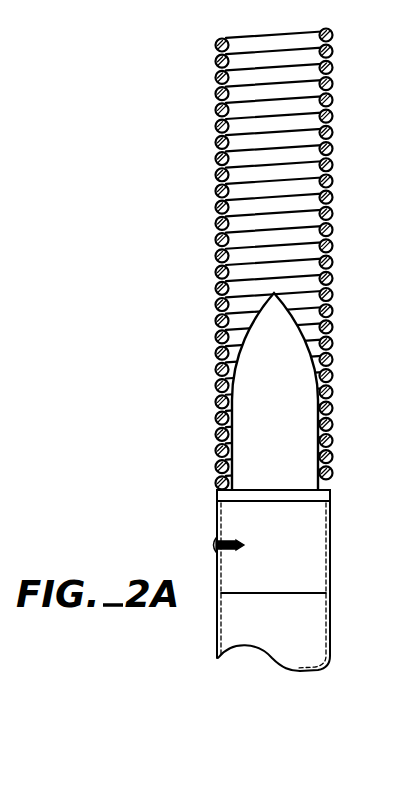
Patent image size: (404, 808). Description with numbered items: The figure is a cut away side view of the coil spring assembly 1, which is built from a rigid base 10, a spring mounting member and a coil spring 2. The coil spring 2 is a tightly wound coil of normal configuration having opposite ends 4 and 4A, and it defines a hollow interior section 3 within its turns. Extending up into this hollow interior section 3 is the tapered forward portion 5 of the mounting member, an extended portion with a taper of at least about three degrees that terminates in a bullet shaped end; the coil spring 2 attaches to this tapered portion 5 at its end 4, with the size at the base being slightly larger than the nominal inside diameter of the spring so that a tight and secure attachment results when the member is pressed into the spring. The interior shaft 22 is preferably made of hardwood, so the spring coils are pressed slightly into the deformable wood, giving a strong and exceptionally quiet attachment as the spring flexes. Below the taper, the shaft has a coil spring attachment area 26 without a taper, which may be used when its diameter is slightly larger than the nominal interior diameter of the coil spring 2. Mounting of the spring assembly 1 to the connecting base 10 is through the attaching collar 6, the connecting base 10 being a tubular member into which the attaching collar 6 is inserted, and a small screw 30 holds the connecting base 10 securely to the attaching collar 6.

The coil spring assembly 1 is at (337, 394).
The coil spring 2 is at (292, 235).
The hollow interior section 3 is at (272, 78).
The end of coil spring 4 is at (331, 500).
The end of coil spring 4A is at (287, 33).
The tapered forward portion 5 is at (249, 459).
The attaching collar 6 is at (333, 541).
The rigid base 10 is at (333, 621).
The interior shaft 22 is at (300, 328).
The coil spring attachment area 26 is at (290, 461).
The small screw 30 is at (214, 545).